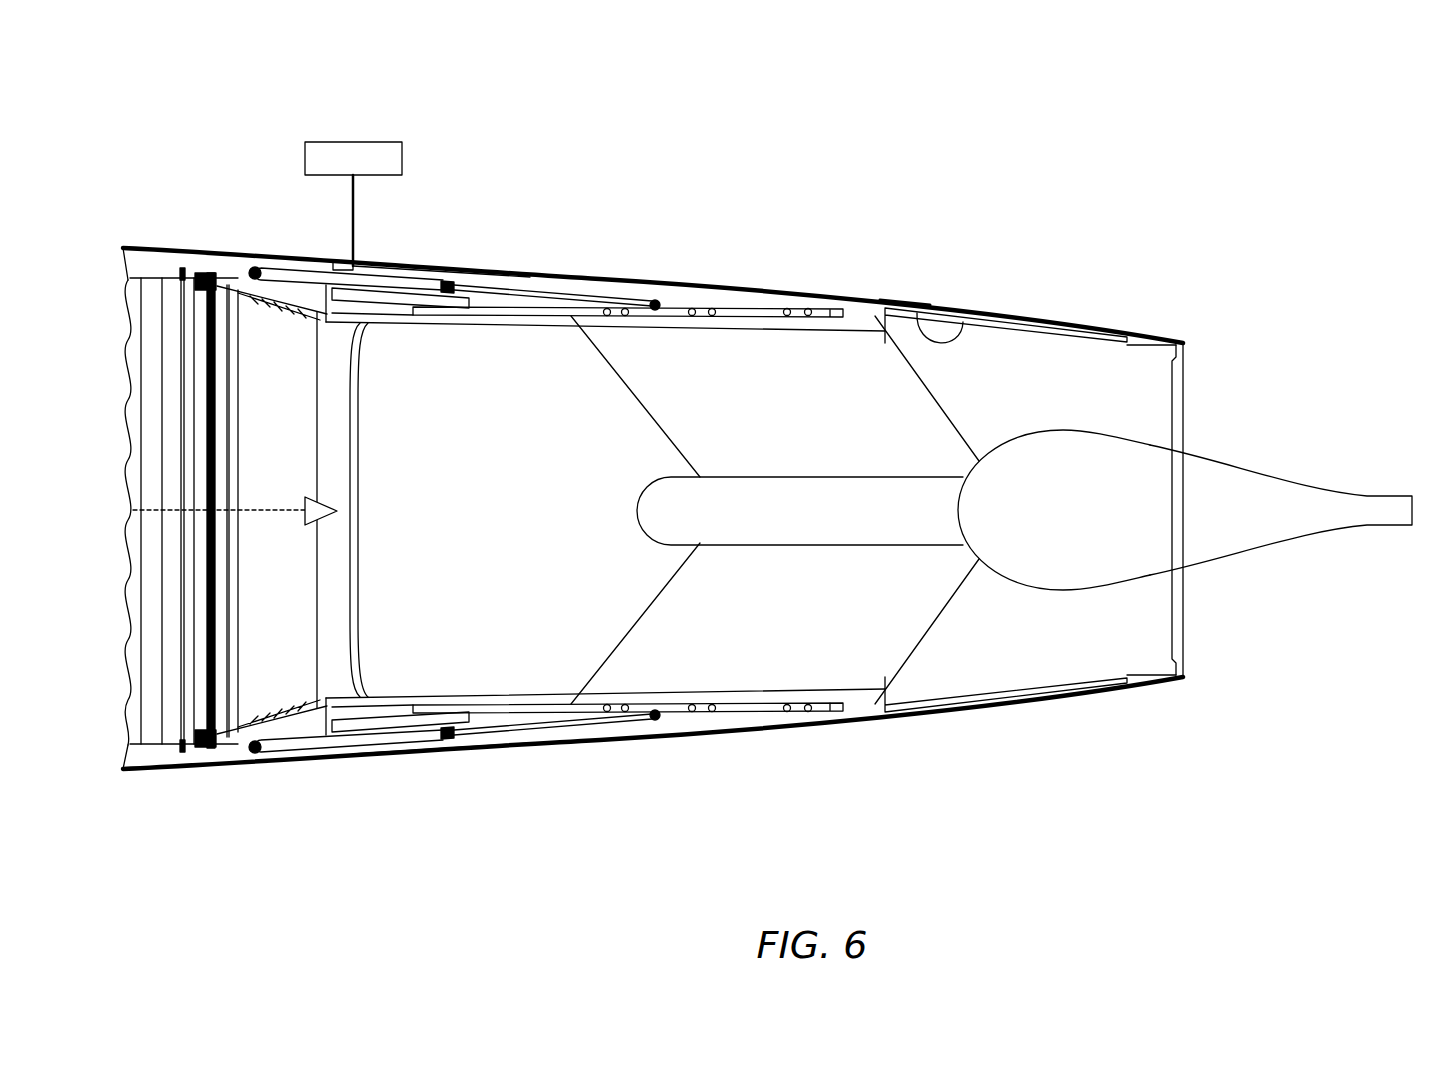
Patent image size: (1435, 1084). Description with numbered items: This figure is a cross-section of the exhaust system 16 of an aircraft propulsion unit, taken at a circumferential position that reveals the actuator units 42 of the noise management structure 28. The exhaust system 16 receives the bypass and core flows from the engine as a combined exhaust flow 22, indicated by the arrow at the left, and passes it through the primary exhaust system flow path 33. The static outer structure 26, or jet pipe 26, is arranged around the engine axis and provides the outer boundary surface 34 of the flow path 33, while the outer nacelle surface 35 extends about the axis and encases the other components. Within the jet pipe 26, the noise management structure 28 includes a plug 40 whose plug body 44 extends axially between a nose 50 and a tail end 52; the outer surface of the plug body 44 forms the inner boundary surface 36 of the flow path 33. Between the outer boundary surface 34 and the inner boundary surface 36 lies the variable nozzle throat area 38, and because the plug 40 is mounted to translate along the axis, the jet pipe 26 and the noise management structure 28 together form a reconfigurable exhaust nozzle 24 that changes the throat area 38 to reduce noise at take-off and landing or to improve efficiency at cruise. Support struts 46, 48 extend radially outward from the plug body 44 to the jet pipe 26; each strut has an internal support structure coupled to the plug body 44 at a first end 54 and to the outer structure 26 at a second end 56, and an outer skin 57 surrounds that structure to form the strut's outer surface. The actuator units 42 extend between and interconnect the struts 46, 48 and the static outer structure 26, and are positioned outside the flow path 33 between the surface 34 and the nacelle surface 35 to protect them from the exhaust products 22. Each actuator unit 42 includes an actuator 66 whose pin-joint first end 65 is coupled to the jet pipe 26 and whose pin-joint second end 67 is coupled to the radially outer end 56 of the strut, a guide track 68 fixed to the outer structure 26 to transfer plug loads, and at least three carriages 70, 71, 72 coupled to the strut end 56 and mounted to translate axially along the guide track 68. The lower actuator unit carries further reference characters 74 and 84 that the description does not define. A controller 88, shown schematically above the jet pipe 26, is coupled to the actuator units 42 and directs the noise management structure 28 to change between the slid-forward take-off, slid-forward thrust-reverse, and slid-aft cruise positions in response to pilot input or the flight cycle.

The exhaust system 16 is at (233, 126).
The combined exhaust flow 22 is at (250, 506).
The reconfigurable exhaust nozzle 24 is at (1044, 206).
The static outer structure 26 is at (996, 300).
The noise management structure 28 is at (1130, 375).
The primary exhaust system flow path 33 is at (444, 507).
The outer boundary surface 34 is at (928, 290).
The outer nacelle surface 35 is at (500, 262).
The inner boundary surface 36 is at (1188, 380).
The variable nozzle throat area 38 is at (1195, 404).
The plug 40 is at (998, 574).
The actuator units 42 is at (522, 216).
The plug body 44 is at (960, 468).
The support strut 46 is at (950, 412).
The support strut 48 is at (925, 640).
The nose 50 is at (622, 537).
The tail end 52 is at (1383, 484).
The first end of the strut 54 is at (690, 470).
The second end of the strut 56 is at (566, 332).
The outer skin 57 is at (608, 358).
The first end of the actuator 65 is at (250, 262).
The actuator 66 is at (418, 272).
The second end of the actuator 67 is at (652, 300).
The guide track 68 is at (763, 304).
The carriage 70 is at (612, 302).
The carriage 71 is at (722, 303).
The carriage 72 is at (807, 304).
The lower actuator housing 74 is at (430, 700).
The lower roller 84 is at (255, 737).
The controller 88 is at (360, 140).